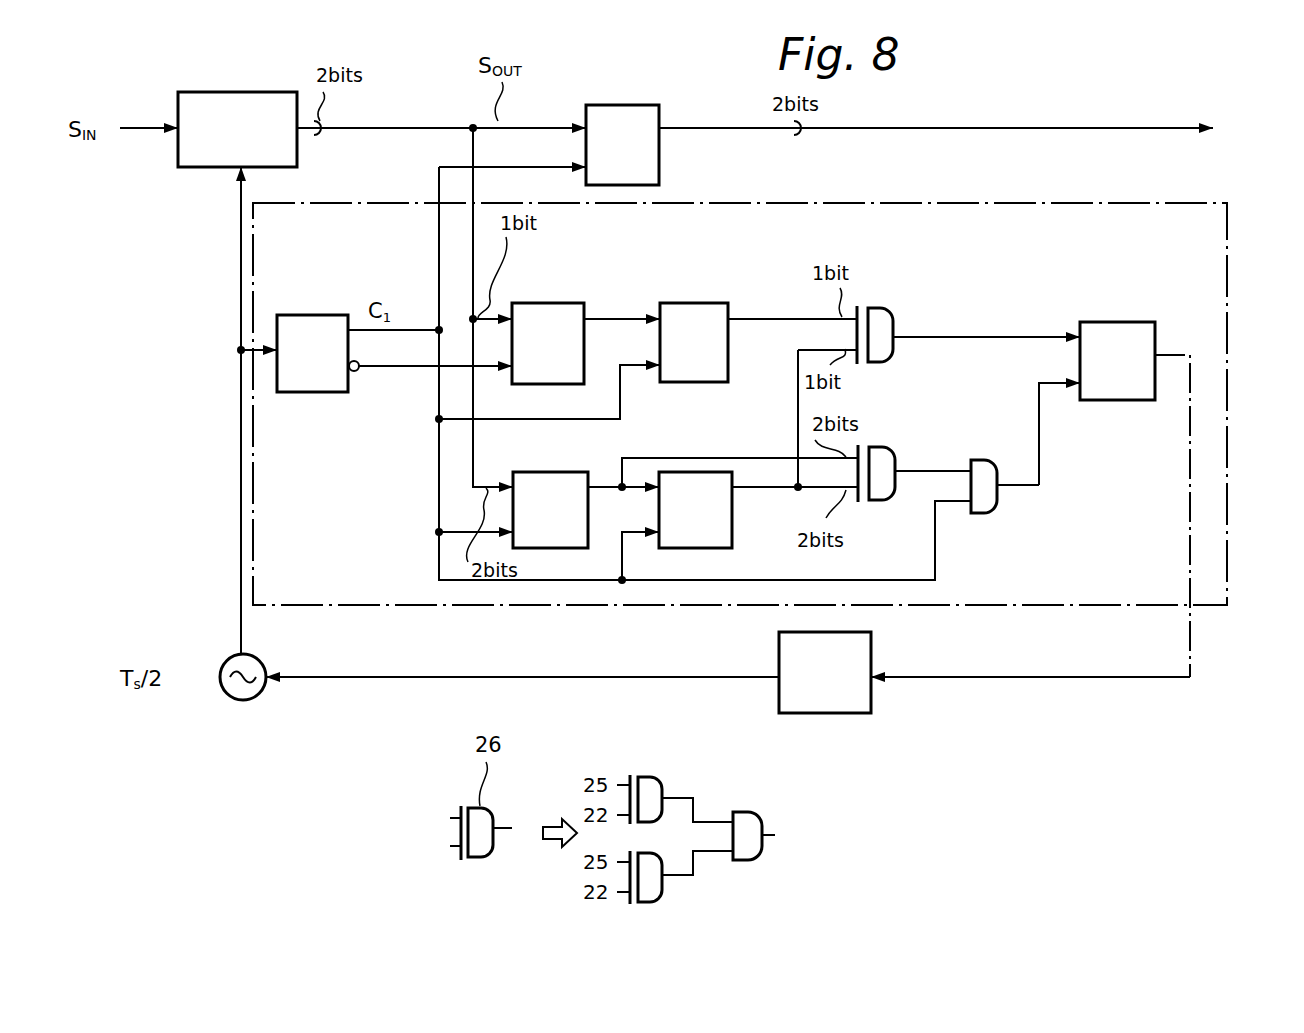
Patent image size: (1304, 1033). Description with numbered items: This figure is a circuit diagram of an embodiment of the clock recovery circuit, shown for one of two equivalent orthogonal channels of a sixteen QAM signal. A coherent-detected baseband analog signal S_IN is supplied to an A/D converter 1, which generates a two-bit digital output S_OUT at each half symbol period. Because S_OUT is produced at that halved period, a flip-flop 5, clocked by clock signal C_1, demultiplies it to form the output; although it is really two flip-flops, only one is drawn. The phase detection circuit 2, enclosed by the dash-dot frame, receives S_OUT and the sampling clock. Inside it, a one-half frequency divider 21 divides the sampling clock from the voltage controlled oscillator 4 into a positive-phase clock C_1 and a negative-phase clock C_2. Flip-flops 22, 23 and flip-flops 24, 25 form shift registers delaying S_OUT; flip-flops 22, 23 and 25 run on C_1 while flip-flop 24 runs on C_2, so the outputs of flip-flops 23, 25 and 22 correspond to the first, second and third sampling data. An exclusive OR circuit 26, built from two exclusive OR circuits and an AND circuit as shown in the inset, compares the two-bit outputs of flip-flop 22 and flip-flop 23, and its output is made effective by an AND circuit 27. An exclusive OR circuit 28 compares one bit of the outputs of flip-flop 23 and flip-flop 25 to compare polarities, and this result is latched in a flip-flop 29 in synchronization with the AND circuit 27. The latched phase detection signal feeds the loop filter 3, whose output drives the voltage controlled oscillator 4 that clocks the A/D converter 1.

The A/D converter 1 is at (242, 92).
The phase detection circuit 2 is at (1233, 293).
The loop filter 3 is at (830, 715).
The voltage controlled oscillator 4 is at (244, 702).
The flip-flop 5 is at (632, 105).
The 1/2 frequency divider 21 is at (312, 394).
The flip-flop 22 is at (527, 472).
The flip-flop 23 is at (686, 472).
The flip-flop 24 is at (544, 303).
The flip-flop 25 is at (697, 303).
The exclusive OR circuit 26 is at (889, 447).
The AND circuit 27 is at (981, 460).
The exclusive OR circuit 28 is at (898, 364).
The flip-flop 29 is at (1113, 322).